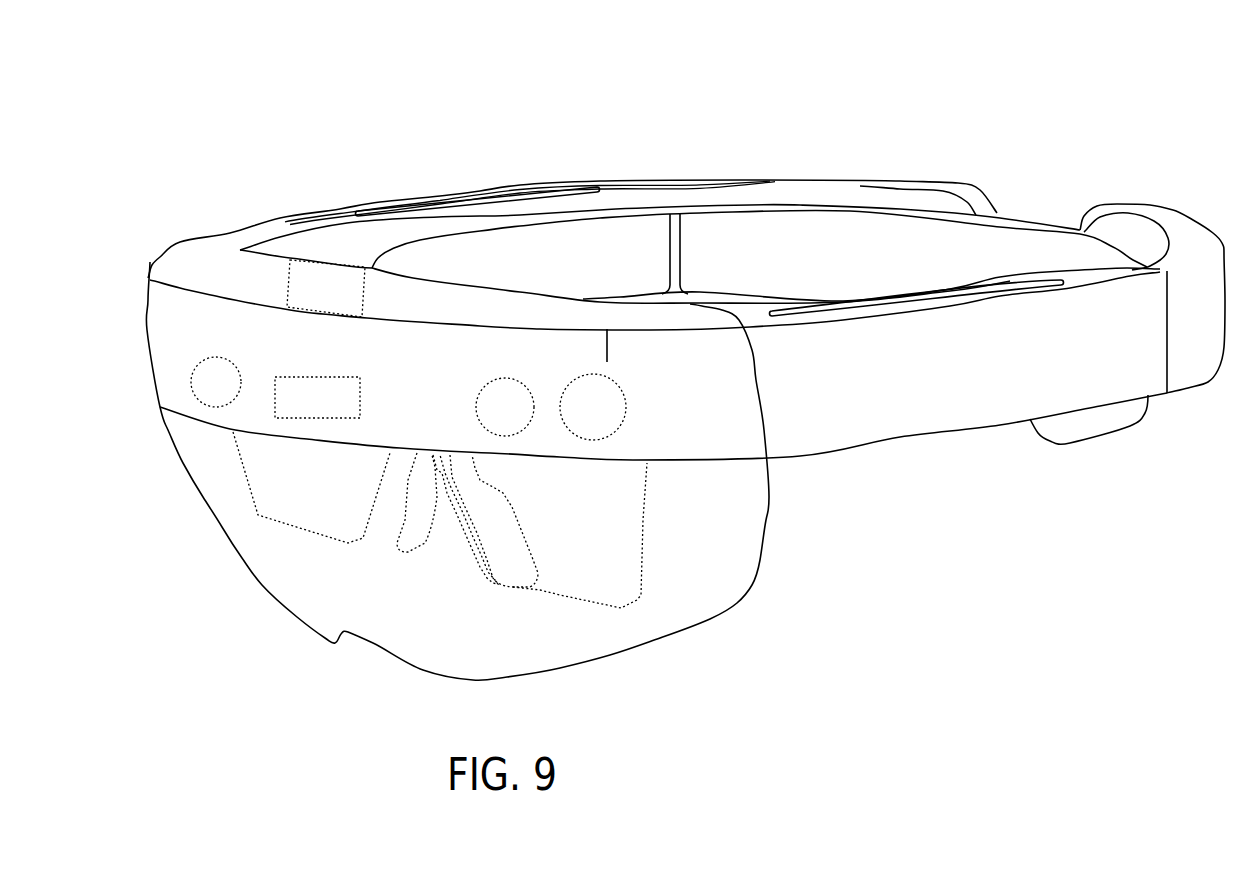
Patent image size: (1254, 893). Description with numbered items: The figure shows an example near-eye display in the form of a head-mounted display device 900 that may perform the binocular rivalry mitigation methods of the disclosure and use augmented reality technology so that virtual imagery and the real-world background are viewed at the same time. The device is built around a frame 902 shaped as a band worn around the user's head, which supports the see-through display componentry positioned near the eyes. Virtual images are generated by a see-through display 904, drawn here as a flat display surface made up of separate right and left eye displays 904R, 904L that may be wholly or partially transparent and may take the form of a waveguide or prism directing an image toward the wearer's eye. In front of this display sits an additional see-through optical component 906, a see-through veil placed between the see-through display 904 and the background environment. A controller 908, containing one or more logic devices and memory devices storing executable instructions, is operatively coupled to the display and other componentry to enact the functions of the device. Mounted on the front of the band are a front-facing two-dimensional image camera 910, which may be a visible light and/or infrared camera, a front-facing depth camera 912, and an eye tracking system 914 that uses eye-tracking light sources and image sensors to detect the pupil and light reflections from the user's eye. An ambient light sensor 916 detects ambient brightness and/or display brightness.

The head-mounted display device 900 is at (1119, 127).
The frame 902 is at (975, 381).
The see-through display 904 is at (646, 507).
The right eye display 904R is at (306, 527).
The left eye display 904L is at (570, 592).
The see-through optical component 906 is at (753, 584).
The controller 908 is at (308, 298).
The front-facing two-dimensional image camera 910 is at (486, 419).
The front-facing depth camera 912 is at (575, 419).
The eye tracking system 914 is at (299, 411).
The ambient light sensor 916 is at (199, 396).